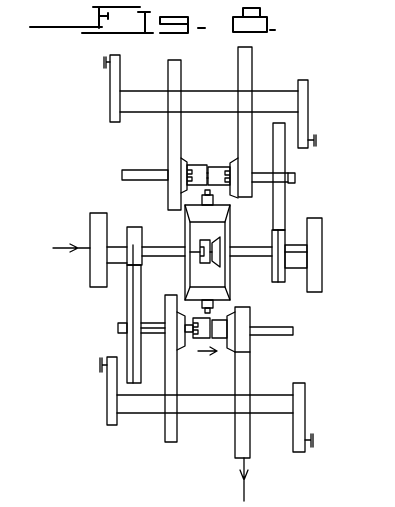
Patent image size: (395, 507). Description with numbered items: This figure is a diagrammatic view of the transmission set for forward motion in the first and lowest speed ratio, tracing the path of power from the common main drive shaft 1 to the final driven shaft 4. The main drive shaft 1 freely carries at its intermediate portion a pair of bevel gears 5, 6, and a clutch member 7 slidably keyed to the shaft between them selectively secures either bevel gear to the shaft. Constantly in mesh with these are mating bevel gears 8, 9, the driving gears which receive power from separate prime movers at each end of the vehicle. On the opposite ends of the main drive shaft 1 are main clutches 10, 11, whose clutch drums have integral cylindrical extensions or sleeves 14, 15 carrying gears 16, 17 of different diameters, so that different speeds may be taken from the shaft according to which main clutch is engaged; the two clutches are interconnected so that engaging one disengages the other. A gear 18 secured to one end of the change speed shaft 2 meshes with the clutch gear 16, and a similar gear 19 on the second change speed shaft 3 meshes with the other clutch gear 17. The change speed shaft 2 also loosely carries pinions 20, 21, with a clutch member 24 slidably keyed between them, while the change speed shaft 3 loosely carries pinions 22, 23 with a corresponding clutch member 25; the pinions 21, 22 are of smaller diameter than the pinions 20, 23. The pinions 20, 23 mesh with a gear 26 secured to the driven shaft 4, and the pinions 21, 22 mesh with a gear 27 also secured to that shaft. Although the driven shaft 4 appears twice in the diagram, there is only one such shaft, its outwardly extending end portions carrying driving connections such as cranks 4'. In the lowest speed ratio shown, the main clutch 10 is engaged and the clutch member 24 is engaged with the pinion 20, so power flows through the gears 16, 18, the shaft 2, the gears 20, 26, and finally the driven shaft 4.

The common main drive shaft 1 is at (248, 256).
The change speed shaft 2 is at (292, 335).
The second change speed shaft 3 is at (329, 160).
The common driven shaft 4 is at (194, 274).
The cranks 4' is at (199, 253).
The bevel gear 5 is at (185, 228).
The bevel gear 6 is at (230, 225).
The clutch member 7 is at (196, 255).
The mating bevel gear 8 is at (217, 212).
The mating bevel gear 9 is at (213, 292).
The main clutch 10 is at (95, 268).
The main clutch 11 is at (362, 240).
The cylindrical extension or sleeve 14 is at (116, 246).
The cylindrical extension or sleeve 15 is at (293, 245).
The main drive shaft clutch gear 16 is at (137, 232).
The main drive shaft clutch gear 17 is at (278, 282).
The gear 18 is at (132, 340).
The gear 19 is at (281, 200).
The pinion 20 is at (172, 353).
The pinion 21 is at (243, 340).
The pinion 22 is at (247, 168).
The pinion 23 is at (172, 150).
The clutch member 24 is at (222, 338).
The clutch member 25 is at (197, 165).
The gear 26 is at (172, 83).
The gear 27 is at (247, 78).